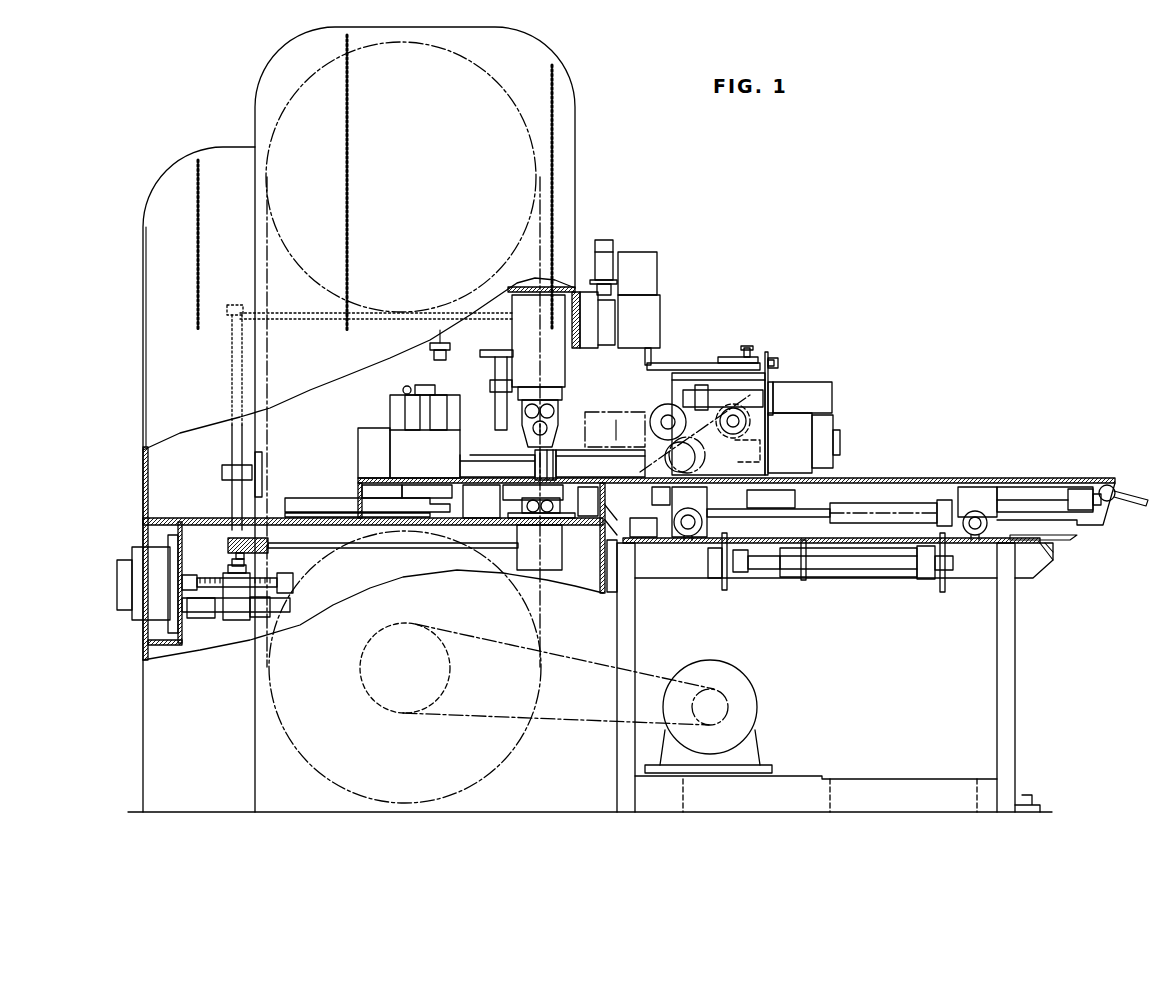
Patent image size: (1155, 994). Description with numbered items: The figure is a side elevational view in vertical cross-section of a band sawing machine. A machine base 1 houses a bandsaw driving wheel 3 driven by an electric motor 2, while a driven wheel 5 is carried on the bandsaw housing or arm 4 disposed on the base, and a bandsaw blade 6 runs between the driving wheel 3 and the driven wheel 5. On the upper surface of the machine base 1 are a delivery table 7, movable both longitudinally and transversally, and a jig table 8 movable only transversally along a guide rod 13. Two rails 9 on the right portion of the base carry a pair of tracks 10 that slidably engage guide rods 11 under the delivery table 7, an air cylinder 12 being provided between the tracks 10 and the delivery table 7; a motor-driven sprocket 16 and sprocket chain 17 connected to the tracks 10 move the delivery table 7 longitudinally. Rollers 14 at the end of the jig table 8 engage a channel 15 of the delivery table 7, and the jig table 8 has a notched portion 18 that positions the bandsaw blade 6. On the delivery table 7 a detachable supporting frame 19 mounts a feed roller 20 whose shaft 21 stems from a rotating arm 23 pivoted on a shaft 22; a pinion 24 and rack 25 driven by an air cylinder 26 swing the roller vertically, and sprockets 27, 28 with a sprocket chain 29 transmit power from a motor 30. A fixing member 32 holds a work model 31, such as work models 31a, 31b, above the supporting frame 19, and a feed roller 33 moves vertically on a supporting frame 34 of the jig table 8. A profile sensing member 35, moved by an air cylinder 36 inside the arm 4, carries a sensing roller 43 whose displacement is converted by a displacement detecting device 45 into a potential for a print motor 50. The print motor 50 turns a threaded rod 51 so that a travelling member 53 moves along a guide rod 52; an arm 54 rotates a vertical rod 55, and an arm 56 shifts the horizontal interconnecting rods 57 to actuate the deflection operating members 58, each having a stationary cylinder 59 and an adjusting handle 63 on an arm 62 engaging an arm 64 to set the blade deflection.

The machine base 1 is at (1010, 658).
The electric motor 2 is at (757, 718).
The bandsaw driving wheel 3 is at (522, 758).
The bandsaw housing or arm 4 is at (578, 123).
The driven wheel 5 is at (522, 106).
The bandsaw blade 6 is at (265, 258).
The delivery table 7 is at (960, 485).
The jig table 8 is at (372, 470).
The rails 9 is at (975, 540).
The tracks 10 is at (980, 490).
The guide rods 11 is at (1040, 490).
The air cylinder 12 is at (905, 505).
The guide rod 13 is at (318, 498).
The rollers 14 is at (598, 525).
The channel 15 is at (602, 590).
The sprocket 16 is at (727, 588).
The sprocket chain 17 is at (712, 580).
The notched portion 18 is at (535, 468).
The supporting frame 19 is at (812, 430).
The feed roller 20 is at (660, 410).
The shaft 21 is at (669, 415).
The shaft 22 is at (747, 422).
The rotating arm 23 is at (696, 457).
The pinion 24 is at (775, 408).
The rack 25 is at (740, 394).
The air cylinder 26 is at (825, 390).
The sprocket 27 is at (652, 416).
The sprocket 28 is at (758, 452).
The sprocket chain 29 is at (693, 395).
The motor 30 is at (838, 452).
The work model 31 is at (725, 334).
The work model 31a is at (772, 362).
The work model 31b is at (752, 358).
The fixing member 32 is at (770, 356).
The feed roller 33 is at (581, 450).
The supporting frame 34 is at (405, 440).
The profile sensing member 35 is at (662, 305).
The air cylinder 36 is at (608, 240).
The sensing roller 43 is at (645, 357).
The displacement detecting device 45 is at (648, 262).
The print motor 50 is at (140, 600).
The threaded rod 51 is at (202, 590).
The guide rod 52 is at (215, 615).
The travelling member 53 is at (245, 592).
The arm 54 is at (234, 561).
The vertical rod 55 is at (233, 452).
The arm 56 is at (240, 538).
The horizontal interconnecting rods 57 is at (295, 322).
The deflection operating member 58 is at (525, 340).
The stationary cylinder 59 is at (512, 305).
The arm 62 is at (485, 356).
The adjusting handle 63 is at (432, 345).
The arm 64 is at (496, 390).